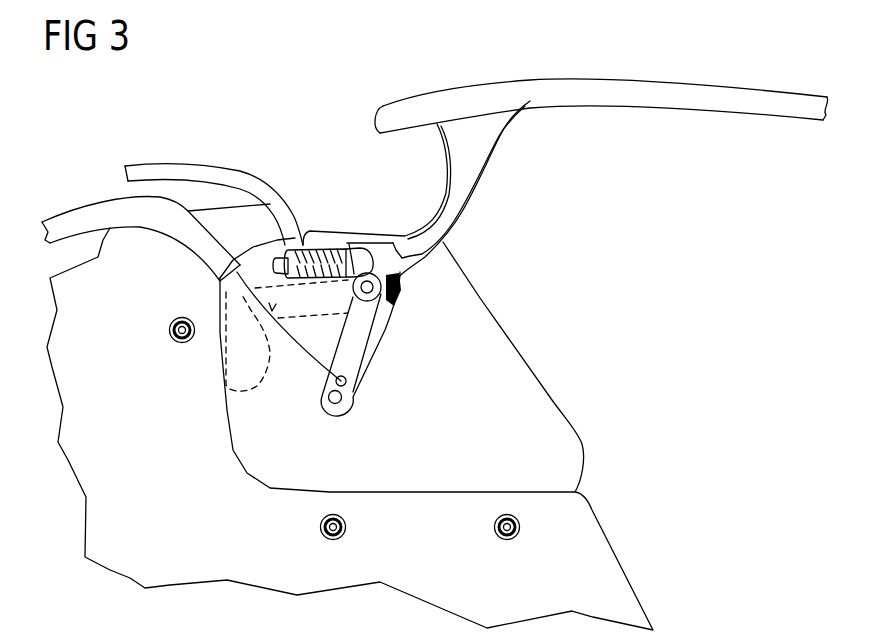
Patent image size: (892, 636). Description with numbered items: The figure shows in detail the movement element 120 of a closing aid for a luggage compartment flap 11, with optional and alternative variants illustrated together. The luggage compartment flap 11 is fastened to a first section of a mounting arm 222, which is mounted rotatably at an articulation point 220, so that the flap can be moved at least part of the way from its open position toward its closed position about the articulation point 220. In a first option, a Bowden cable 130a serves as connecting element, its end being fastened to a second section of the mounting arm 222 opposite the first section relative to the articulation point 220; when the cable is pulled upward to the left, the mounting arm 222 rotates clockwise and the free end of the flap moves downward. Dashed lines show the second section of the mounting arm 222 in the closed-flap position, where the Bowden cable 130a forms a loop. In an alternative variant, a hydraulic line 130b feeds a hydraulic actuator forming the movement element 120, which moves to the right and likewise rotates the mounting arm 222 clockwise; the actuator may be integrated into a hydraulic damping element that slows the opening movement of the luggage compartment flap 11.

The luggage compartment flap 11 is at (690, 97).
The movement element 120 is at (310, 378).
The Bowden cable 130a is at (88, 212).
The hydraulic line 130b is at (229, 170).
The articulation point 220 is at (403, 274).
The mounting arm 222 is at (470, 163).